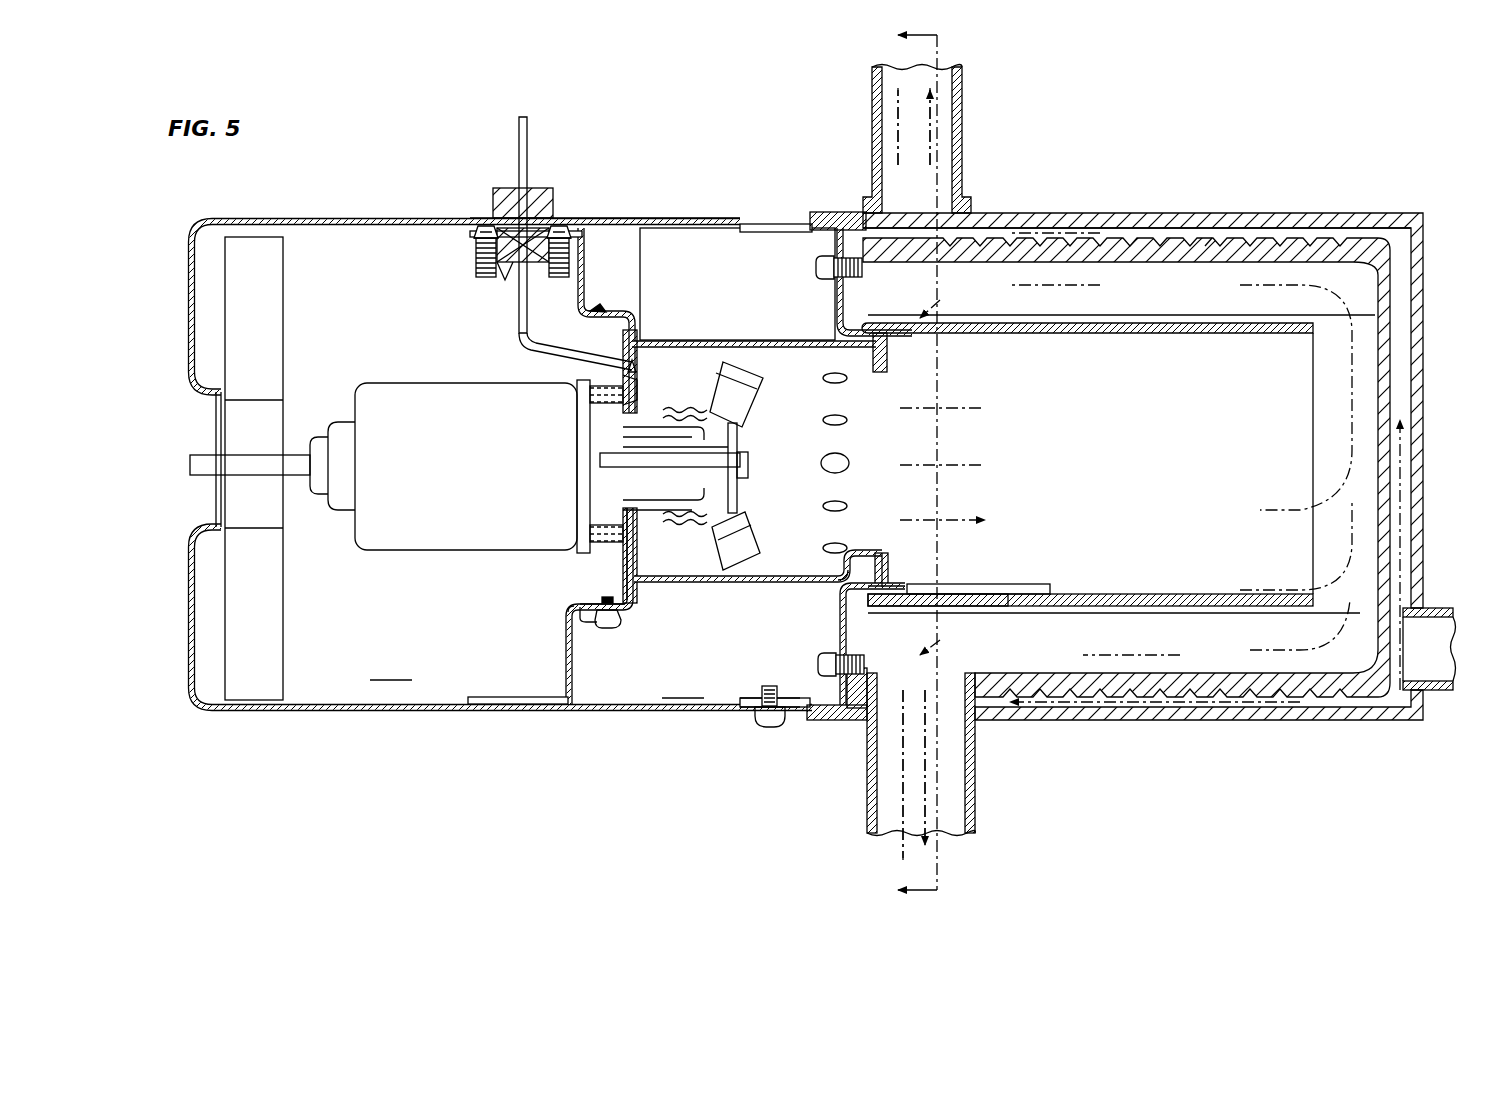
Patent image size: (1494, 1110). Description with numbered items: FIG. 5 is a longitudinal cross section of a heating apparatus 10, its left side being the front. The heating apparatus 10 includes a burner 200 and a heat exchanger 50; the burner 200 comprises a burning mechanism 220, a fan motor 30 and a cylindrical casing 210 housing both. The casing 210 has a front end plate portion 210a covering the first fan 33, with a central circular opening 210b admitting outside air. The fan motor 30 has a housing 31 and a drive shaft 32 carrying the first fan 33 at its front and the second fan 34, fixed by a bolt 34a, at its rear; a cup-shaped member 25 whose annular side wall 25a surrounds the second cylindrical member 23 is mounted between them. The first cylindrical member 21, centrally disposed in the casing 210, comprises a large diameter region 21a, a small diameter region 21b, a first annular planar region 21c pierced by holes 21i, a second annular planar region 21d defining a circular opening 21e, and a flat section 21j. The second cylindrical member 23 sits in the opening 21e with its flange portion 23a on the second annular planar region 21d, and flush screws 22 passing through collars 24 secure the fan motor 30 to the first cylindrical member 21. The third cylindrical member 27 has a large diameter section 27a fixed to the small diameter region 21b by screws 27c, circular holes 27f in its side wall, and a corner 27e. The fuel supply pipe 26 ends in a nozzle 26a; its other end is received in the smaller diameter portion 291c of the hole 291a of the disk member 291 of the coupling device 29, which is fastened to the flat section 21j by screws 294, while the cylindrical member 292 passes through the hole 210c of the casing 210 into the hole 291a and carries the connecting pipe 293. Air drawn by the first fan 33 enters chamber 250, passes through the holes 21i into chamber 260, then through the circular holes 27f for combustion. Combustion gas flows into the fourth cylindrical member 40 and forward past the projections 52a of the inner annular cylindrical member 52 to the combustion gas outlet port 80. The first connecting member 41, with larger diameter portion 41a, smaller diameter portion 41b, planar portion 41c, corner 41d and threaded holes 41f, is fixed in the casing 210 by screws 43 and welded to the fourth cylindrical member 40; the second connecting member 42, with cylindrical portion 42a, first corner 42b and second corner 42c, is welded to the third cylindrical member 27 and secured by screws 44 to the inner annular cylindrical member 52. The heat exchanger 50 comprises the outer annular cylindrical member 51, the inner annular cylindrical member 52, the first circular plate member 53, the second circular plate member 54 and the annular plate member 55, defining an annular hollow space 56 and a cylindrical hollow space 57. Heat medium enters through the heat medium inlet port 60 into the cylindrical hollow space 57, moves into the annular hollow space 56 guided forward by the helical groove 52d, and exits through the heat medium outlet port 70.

The heating apparatus 10 is at (716, 216).
The burner 200 is at (347, 218).
The cylindrical casing 210 is at (640, 218).
The front end plate portion 210a is at (185, 322).
The circular opening 210b is at (188, 530).
The hole 210c is at (505, 215).
The burning mechanism 220 is at (755, 337).
The chamber 250 is at (391, 668).
The chamber 260 is at (683, 686).
The first cylindrical member 21 is at (586, 247).
The large diameter region 21a is at (537, 705).
The small diameter region 21b is at (570, 612).
The first annular planar region 21c is at (603, 312).
The second annular planar region 21d is at (600, 609).
The circular opening 21e is at (640, 515).
The holes 21i is at (586, 278).
The flat section 21j is at (538, 250).
The flush screws 22 is at (625, 565).
The second cylindrical member 23 is at (748, 405).
The flange portion 23a is at (600, 371).
The collars 24 is at (590, 537).
The cup-shaped member 25 is at (708, 412).
The annular side wall 25a is at (670, 412).
The fuel supply pipe 26 is at (520, 330).
The nozzle 26a is at (742, 433).
The third cylindrical member 27 is at (728, 583).
The large diameter section 27a is at (595, 640).
The screws 27c is at (612, 628).
The corner 27e is at (880, 553).
The circular holes 27f is at (845, 462).
The coupling device 29 is at (477, 260).
The disk member 291 is at (505, 272).
The hole 291a is at (490, 256).
The smaller diameter portion 291c is at (528, 290).
The cylindrical member 292 is at (506, 187).
The connecting pipe 293 is at (519, 133).
The screws 294 is at (488, 232).
The fan motor 30 is at (412, 550).
The housing 31 is at (400, 393).
The drive shaft 32 is at (292, 455).
The first fan 33 is at (275, 632).
The second fan 34 is at (748, 490).
The bolt 34a is at (748, 465).
The fourth cylindrical member 40 is at (1115, 333).
The first connecting member 41 is at (810, 720).
The larger diameter portion 41a is at (752, 698).
The smaller diameter portion 41b is at (900, 588).
The planar portion 41c is at (852, 648).
The corner 41d is at (905, 598).
The female screw threaded holes 41f is at (742, 706).
The second connecting member 42 is at (838, 598).
The cylindrical portion 42a is at (872, 582).
The first corner 42b is at (830, 573).
The second corner 42c is at (888, 575).
The screws 43 is at (770, 727).
The screws 44 is at (820, 268).
The heat exchanger 50 is at (1178, 213).
The outer annular cylindrical member 51 is at (1262, 720).
The inner annular cylindrical member 52 is at (1168, 690).
The projections 52a is at (1237, 284).
The helical groove 52d is at (1215, 240).
The first circular plate member 53 is at (1421, 315).
The second circular plate member 54 is at (1392, 362).
The annular plate member 55 is at (846, 226).
The annular hollow space 56 is at (1155, 226).
The cylindrical hollow space 57 is at (1422, 445).
The heat medium inlet port 60 is at (1437, 610).
The heat medium outlet port 70 is at (963, 110).
The combustion gas outlet port 80 is at (975, 760).